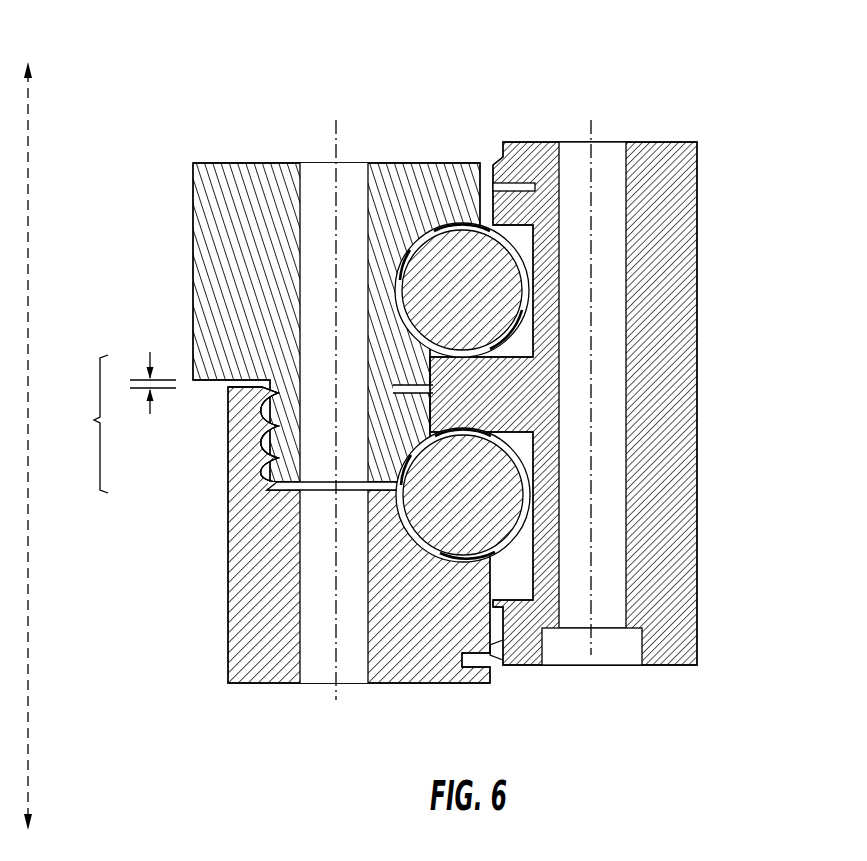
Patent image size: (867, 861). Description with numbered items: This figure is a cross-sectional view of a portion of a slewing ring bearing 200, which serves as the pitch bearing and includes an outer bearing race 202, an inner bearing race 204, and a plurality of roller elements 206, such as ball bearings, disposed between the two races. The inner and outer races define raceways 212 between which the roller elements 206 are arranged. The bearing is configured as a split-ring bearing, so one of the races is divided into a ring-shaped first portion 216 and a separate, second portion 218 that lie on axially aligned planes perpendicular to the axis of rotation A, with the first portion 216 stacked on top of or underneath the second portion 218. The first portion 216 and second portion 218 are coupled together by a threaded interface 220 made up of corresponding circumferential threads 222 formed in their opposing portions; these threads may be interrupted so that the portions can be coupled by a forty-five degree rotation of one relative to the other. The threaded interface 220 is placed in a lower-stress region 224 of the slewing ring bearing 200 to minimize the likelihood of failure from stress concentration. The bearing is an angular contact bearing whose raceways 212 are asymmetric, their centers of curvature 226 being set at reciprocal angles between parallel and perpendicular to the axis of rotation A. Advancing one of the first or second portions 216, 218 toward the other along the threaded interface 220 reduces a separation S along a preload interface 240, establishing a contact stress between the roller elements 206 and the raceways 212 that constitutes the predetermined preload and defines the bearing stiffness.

The slewing ring bearing 200 is at (422, 375).
The outer bearing race 202 is at (680, 142).
The inner bearing race 204 is at (306, 289).
The roller elements 206 is at (549, 410).
The raceways 212 is at (431, 224).
The first portion 216 is at (205, 262).
The second portion 218 is at (268, 503).
The threaded interface 220 is at (246, 446).
The circumferential threads 222 is at (275, 372).
The lower-stress region 224 is at (77, 424).
The centers of curvature 226 is at (426, 232).
The preload interface 240 is at (230, 387).
The axis of rotation A is at (29, 122).
The separation S is at (152, 375).